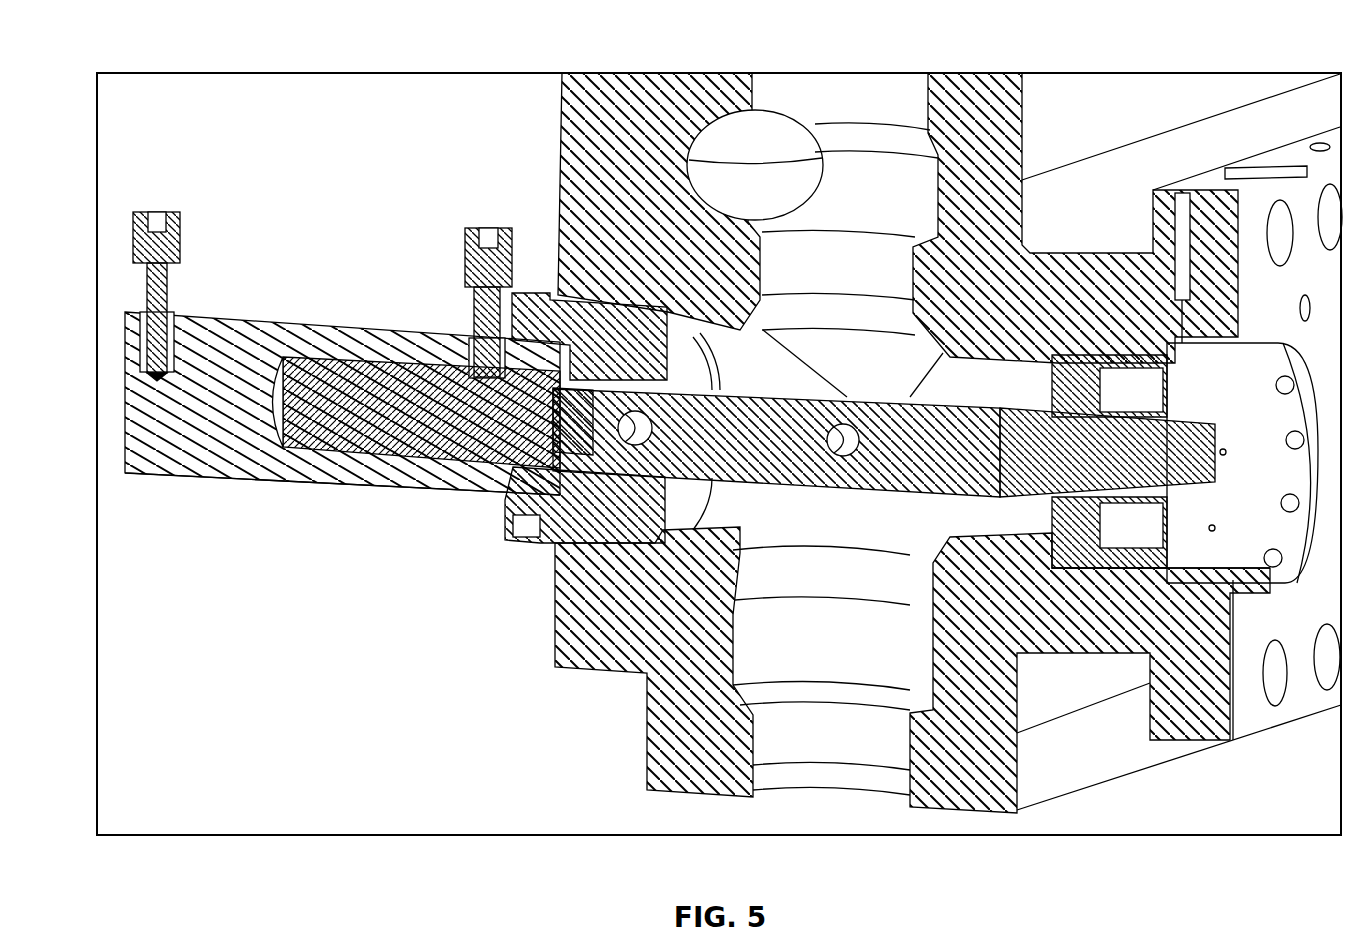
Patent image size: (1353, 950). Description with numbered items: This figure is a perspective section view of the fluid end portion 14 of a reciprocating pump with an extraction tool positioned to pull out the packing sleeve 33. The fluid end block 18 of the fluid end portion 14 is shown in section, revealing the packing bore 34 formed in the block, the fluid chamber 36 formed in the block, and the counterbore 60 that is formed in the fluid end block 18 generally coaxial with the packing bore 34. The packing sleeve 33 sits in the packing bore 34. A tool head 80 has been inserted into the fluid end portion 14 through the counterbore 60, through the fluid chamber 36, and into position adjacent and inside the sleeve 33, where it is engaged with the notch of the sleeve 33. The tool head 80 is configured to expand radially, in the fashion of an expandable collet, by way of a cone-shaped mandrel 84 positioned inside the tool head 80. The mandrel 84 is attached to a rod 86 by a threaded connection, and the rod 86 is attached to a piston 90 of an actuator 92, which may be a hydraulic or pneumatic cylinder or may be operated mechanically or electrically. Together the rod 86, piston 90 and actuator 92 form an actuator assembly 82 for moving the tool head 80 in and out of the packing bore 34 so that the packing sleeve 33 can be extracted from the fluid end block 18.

The fluid end portion 14 is at (985, 832).
The fluid end block 18 is at (660, 710).
The packing sleeve 33 is at (1112, 572).
The packing bore 34 is at (968, 375).
The fluid chamber 36 is at (814, 540).
The counterbore 60 is at (620, 322).
The tool head 80 is at (1022, 538).
The actuator assembly 82 is at (447, 487).
The cone-shaped mandrel 84 is at (1110, 447).
The rod 86 is at (800, 412).
The piston 90 is at (390, 413).
The actuator 92 is at (237, 336).